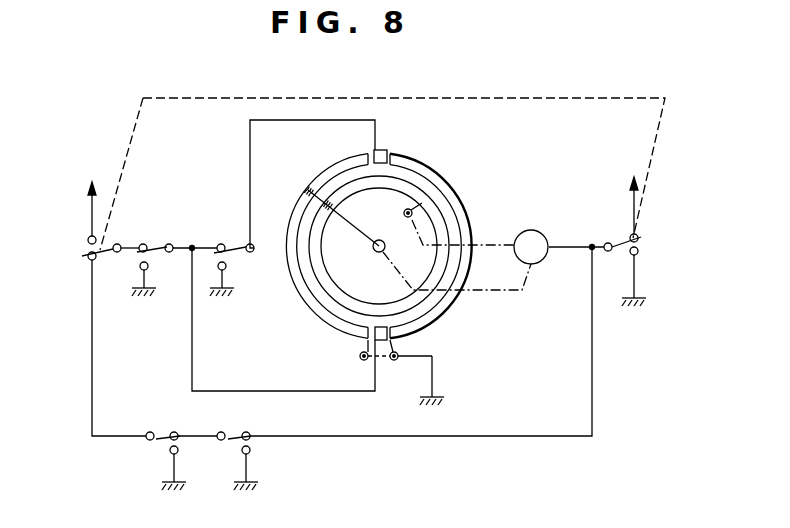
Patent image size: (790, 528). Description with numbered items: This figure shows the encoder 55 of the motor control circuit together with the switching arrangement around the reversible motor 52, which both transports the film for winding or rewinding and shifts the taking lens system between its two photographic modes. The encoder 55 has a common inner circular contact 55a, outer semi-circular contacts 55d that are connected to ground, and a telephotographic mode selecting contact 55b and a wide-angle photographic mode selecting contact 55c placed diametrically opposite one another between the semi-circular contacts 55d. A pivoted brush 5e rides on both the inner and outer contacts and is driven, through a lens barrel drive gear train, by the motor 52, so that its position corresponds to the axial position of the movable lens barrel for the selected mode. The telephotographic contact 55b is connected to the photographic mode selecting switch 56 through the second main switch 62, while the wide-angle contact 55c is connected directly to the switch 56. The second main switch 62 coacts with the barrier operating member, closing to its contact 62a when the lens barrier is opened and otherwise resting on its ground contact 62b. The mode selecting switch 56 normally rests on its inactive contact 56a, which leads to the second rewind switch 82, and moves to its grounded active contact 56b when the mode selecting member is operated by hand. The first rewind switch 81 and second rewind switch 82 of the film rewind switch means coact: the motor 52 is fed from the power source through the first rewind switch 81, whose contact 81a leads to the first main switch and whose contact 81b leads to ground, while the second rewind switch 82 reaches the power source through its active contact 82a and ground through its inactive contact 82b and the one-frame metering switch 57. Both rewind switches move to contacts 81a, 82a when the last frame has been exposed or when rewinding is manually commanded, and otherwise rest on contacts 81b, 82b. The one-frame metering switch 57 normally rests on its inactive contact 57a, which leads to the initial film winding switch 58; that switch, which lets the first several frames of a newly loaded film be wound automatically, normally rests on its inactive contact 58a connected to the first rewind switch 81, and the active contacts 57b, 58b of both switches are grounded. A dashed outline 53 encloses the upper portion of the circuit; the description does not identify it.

The control unit housing 53 is at (535, 97).
The encoder 55 is at (385, 231).
The common inner circular contact 55a is at (407, 186).
The telephotographic mode selecting contact 55b is at (383, 150).
The wide-angle photographic mode selecting contact 55c is at (368, 344).
The outer semi-circular contacts 55d is at (296, 222).
The pivot shaft 5e is at (373, 250).
The reversible motor 52 is at (531, 230).
The photographic mode selecting switch 56 is at (169, 244).
The inactive contact 56a is at (143, 244).
The active contact 56b is at (148, 270).
The second main switch 62 is at (245, 245).
The contact 62a is at (220, 244).
The ground contact 62b is at (226, 270).
The one-frame metering switch 57 is at (151, 432).
The inactive contact 57a is at (175, 432).
The active contact 57b is at (170, 450).
The initial film winding switch 58 is at (222, 432).
The inactive contact 58a is at (248, 432).
The active contact 58b is at (250, 450).
The first rewind switch 81 is at (609, 242).
The contact 81a is at (638, 237).
The contact 81b is at (637, 255).
The second rewind switch 82 is at (108, 252).
The active contact 82a is at (90, 237).
The inactive contact 82b is at (90, 260).